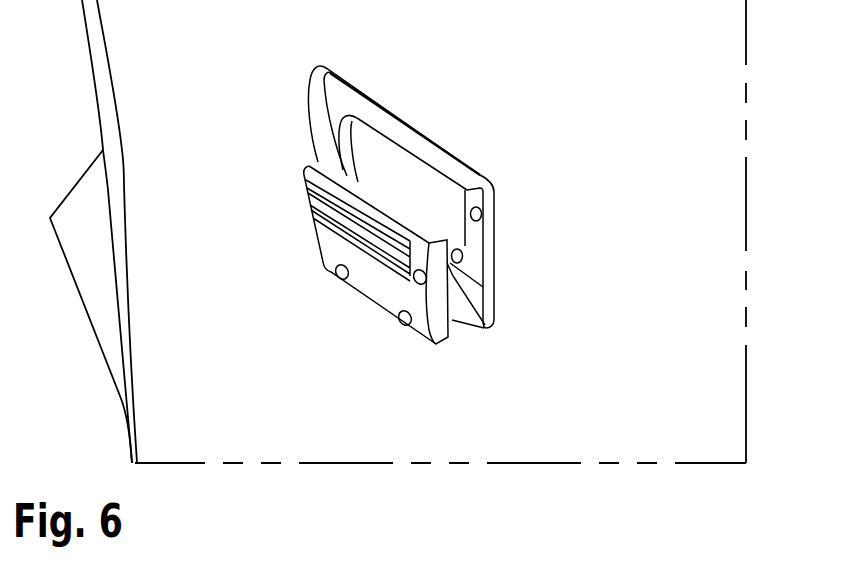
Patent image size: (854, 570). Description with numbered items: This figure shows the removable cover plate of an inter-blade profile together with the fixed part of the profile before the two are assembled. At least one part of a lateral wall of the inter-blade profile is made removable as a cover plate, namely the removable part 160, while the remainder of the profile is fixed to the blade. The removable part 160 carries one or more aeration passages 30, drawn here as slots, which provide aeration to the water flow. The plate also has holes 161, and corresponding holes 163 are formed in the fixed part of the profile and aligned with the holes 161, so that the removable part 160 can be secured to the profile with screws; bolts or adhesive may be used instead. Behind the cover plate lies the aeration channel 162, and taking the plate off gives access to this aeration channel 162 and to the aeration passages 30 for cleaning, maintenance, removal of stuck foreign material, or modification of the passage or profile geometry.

The aeration passage 30 is at (296, 171).
The removable part 160 is at (344, 180).
The holes 161 is at (341, 281).
The aeration channel 162 is at (427, 166).
The holes in the fixed part 163 is at (463, 259).